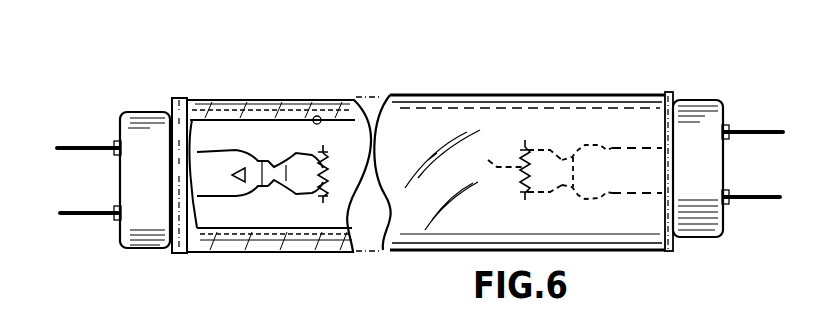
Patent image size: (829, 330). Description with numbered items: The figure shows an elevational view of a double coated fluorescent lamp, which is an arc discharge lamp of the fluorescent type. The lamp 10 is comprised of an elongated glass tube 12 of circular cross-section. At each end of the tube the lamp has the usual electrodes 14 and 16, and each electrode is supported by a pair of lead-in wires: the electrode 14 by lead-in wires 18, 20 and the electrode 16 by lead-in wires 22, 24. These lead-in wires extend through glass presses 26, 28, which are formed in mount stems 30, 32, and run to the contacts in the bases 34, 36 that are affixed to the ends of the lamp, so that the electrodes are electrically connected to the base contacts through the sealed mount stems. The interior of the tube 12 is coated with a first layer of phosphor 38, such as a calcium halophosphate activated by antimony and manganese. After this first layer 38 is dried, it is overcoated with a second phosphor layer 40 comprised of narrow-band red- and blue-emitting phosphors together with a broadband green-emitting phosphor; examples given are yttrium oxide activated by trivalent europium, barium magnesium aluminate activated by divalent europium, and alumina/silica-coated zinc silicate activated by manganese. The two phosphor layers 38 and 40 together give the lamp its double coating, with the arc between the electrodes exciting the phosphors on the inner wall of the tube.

The lamp 10 is at (553, 82).
The elongated glass tube 12 is at (470, 96).
The electrode 14 is at (330, 166).
The electrode 16 is at (499, 169).
The lead-in wire 18 is at (285, 163).
The lead-in wire 20 is at (310, 193).
The lead-in wire 22 is at (559, 141).
The lead-in wire 24 is at (559, 194).
The glass press 26 is at (236, 153).
The glass press 28 is at (602, 202).
The mount stem 30 is at (208, 188).
The mount stem 32 is at (643, 149).
The base 34 is at (120, 177).
The base 36 is at (720, 175).
The first layer of phosphor 38 is at (265, 113).
The second phosphor layer 40 is at (317, 116).